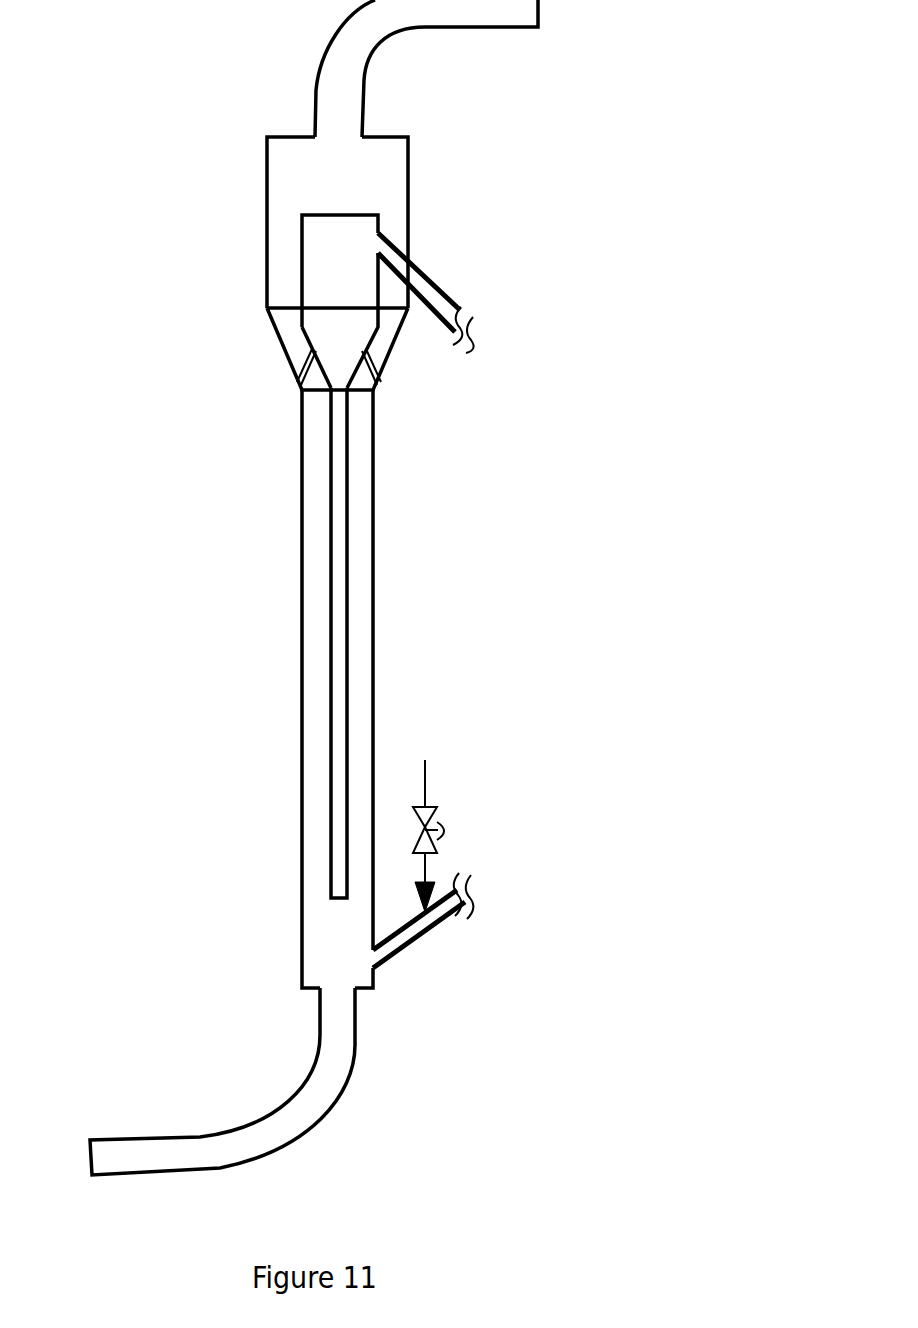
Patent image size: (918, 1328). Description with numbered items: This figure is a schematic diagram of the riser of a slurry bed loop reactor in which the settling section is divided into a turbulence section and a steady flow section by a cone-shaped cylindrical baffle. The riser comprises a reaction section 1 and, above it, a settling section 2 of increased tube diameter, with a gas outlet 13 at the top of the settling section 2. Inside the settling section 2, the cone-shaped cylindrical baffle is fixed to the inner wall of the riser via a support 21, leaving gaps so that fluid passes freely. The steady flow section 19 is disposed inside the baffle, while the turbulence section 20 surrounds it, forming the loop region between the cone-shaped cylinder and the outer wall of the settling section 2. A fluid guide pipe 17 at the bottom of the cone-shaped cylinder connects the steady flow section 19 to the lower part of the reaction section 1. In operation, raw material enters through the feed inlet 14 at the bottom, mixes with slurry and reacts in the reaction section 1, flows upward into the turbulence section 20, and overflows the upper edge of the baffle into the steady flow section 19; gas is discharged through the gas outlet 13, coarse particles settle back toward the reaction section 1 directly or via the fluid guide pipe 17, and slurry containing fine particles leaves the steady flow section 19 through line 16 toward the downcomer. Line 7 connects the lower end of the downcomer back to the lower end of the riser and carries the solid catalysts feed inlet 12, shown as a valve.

The reaction section 1 is at (300, 623).
The settling section 2 is at (293, 172).
The line 7 is at (395, 957).
The solid catalysts feed inlet 12 is at (423, 867).
The gas outlet 13 is at (448, 28).
The feed inlet 14 is at (290, 1093).
The line 16 is at (438, 288).
The fluid guide pipe 17 is at (328, 512).
The steady flow section 19 is at (345, 255).
The turbulence section 20 is at (293, 297).
The support 21 is at (287, 367).